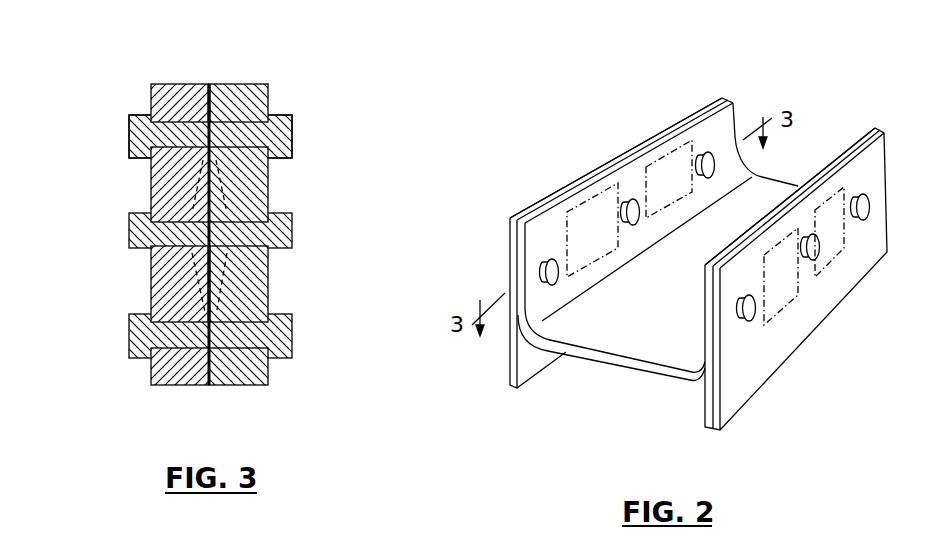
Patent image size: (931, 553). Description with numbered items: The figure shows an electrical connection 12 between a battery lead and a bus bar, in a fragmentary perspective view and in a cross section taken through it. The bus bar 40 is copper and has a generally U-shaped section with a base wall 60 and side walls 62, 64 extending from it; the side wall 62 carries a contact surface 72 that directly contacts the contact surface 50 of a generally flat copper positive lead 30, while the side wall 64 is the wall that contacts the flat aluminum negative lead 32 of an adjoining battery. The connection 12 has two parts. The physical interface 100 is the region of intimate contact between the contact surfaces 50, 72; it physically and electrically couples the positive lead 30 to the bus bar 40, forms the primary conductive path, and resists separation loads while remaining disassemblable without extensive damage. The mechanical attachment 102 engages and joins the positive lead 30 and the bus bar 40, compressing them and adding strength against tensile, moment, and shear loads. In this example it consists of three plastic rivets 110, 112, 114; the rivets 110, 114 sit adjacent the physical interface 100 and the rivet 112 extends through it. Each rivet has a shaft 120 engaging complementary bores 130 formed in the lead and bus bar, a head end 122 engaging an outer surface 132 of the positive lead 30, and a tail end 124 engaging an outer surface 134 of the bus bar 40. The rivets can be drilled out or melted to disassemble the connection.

In FIG. 3, the electrical connection 12 is at (209, 85).
In FIG. 2, the electrical connection 12 is at (653, 140).
In FIG. 3, the positive lead 30 is at (163, 95).
In FIG. 2, the positive lead 30 is at (533, 357).
In FIG. 2, the negative lead 32 is at (730, 400).
In FIG. 3, the bus bar 40 is at (266, 102).
In FIG. 2, the bus bar 40 is at (642, 190).
In FIG. 3, the contact surface 50 is at (210, 300).
In FIG. 2, the base wall 60 is at (644, 227).
In FIG. 3, the side wall 62 is at (262, 372).
In FIG. 2, the side wall 62 is at (730, 113).
In FIG. 2, the side wall 64 is at (705, 312).
In FIG. 3, the contact surface 72 is at (192, 265).
In FIG. 3, the physical interface 100 is at (185, 200).
In FIG. 3, the mechanical attachment 102 is at (207, 215).
In FIG. 3, the rivet 110 is at (217, 143).
In FIG. 2, the rivet 110 is at (713, 167).
In FIG. 3, the rivet 112 is at (292, 236).
In FIG. 2, the rivet 112 is at (637, 214).
In FIG. 3, the rivet 114 is at (292, 337).
In FIG. 2, the rivet 114 is at (558, 273).
In FIG. 3, the shaft 120 is at (241, 157).
In FIG. 3, the head end 122 is at (135, 148).
In FIG. 3, the tail end 124 is at (292, 147).
In FIG. 3, the bore 130 is at (262, 163).
In FIG. 3, the outer surface 132 is at (152, 184).
In FIG. 3, the outer surface 134 is at (268, 284).